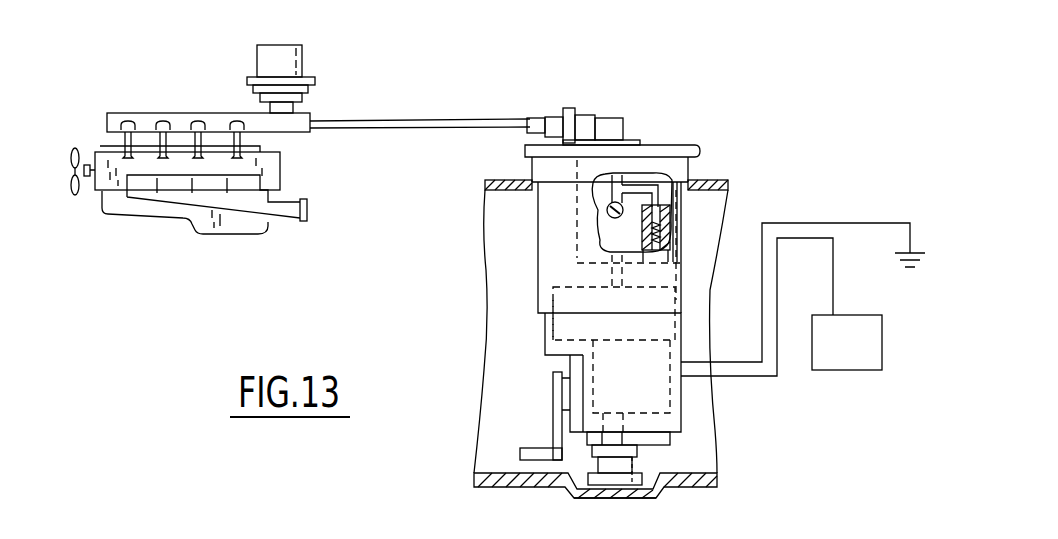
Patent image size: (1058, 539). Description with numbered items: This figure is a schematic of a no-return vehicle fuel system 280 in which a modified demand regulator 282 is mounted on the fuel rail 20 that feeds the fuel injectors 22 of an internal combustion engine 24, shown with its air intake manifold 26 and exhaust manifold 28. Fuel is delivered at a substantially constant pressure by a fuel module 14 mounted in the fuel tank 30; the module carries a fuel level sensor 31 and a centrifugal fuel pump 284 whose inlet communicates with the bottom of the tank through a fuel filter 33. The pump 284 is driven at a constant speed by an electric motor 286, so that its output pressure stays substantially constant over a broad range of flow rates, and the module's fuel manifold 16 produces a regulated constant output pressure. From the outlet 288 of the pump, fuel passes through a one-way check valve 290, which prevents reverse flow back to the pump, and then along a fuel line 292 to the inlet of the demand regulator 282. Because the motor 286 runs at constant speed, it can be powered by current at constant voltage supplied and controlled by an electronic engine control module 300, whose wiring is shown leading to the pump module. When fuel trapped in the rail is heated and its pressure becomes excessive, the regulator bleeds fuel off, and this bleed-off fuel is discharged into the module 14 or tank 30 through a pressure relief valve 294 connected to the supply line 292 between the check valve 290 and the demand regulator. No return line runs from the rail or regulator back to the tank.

The fuel module 14 is at (531, 263).
The fuel manifold 16 is at (577, 259).
The fuel rail 20 is at (127, 113).
The fuel injectors 22 is at (198, 122).
The internal combustion engine 24 is at (187, 221).
The air intake manifold 26 is at (105, 146).
The exhaust manifold 28 is at (290, 220).
The fuel tank 30 is at (512, 488).
The fuel level sensor 31 is at (528, 445).
The fuel filter 33 is at (630, 483).
The no-return vehicle fuel system 280 is at (713, 72).
The modified demand regulator 282 is at (333, 31).
The centrifugal fuel pump 284 is at (672, 410).
The electric motor 286 is at (553, 333).
The outlet 288 is at (600, 279).
The one-way check valve 290 is at (600, 220).
The fuel line 292 is at (380, 122).
The pressure relief valve 294 is at (680, 220).
The electronic engine control (EEC) module 300 is at (842, 372).